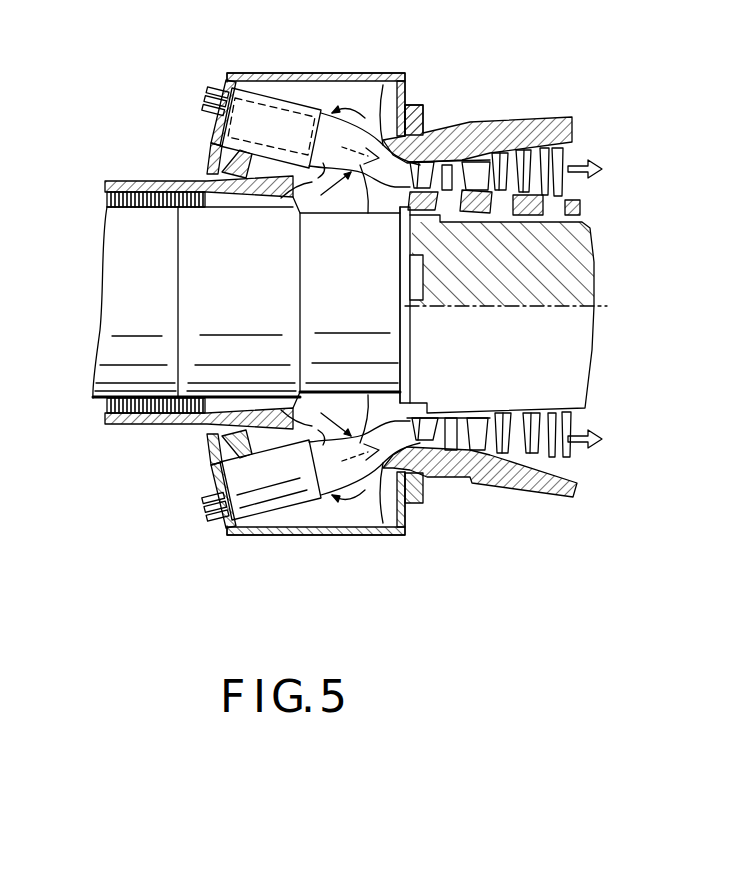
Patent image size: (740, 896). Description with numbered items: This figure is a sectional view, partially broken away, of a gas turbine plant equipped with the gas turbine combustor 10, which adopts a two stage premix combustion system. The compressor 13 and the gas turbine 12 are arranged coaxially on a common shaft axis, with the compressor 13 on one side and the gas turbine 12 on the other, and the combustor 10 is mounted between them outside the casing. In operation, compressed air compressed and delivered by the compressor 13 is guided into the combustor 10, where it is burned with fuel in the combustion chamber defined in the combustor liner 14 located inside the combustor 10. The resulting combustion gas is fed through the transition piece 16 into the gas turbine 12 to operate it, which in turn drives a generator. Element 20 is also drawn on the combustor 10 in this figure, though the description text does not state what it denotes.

The combustor 10 is at (310, 100).
The turbine 12 is at (574, 128).
The compressor 13 is at (96, 215).
The fuel vaporizer insert 14 is at (292, 108).
The combustor casing 16 is at (384, 88).
The fuel injector 20 is at (258, 90).